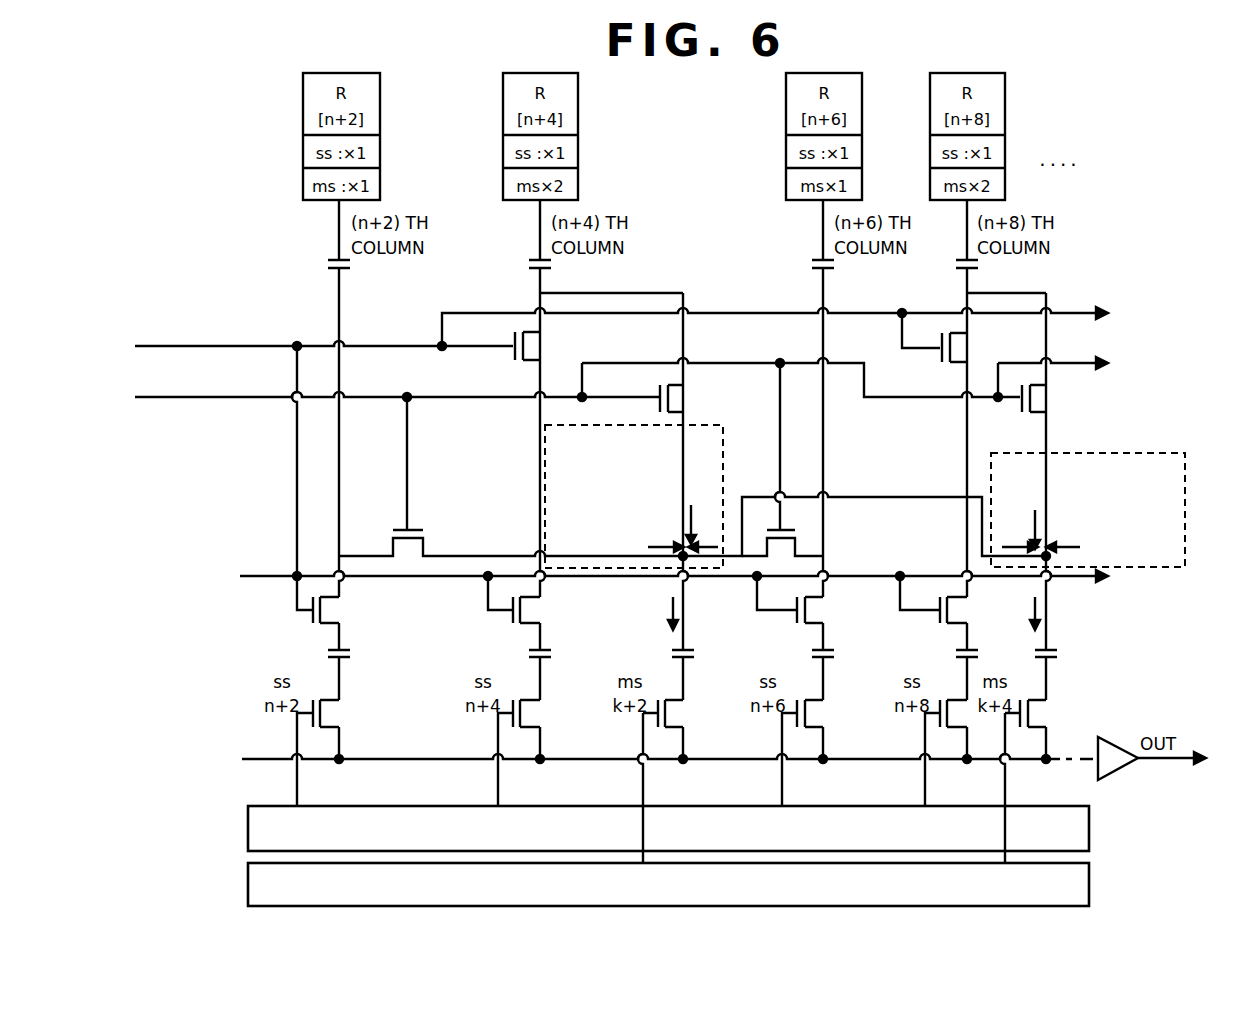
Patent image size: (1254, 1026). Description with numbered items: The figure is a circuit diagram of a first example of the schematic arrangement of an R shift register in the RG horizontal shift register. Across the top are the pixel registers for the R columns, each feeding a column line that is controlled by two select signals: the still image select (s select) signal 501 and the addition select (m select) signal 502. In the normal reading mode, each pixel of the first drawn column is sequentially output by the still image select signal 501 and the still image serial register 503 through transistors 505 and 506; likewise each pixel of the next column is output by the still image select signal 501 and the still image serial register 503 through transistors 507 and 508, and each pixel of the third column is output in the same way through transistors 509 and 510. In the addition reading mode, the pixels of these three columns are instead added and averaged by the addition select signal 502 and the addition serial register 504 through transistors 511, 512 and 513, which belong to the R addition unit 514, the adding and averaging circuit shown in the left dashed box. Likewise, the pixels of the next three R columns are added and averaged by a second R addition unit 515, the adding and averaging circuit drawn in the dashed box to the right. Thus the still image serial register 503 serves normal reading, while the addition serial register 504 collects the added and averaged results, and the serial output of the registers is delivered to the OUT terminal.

The still image select (s select) signal 501 is at (206, 346).
The addition select (m select) signal 502 is at (206, 397).
The still image serial register 503 is at (248, 830).
The addition serial register 504 is at (248, 888).
The transistor 505 is at (342, 609).
The transistor 506 is at (346, 712).
The transistor 507 is at (542, 609).
The transistor 508 is at (546, 718).
The transistor 509 is at (826, 609).
The transistor 510 is at (828, 710).
The transistor 511 is at (432, 526).
The transistor 512 is at (688, 398).
The transistor 513 is at (781, 570).
The R addition unit 514 is at (548, 448).
The R addition unit 515 is at (1118, 455).